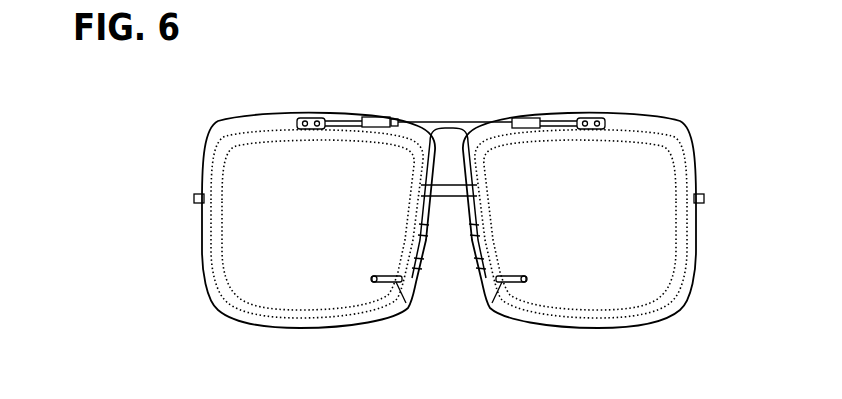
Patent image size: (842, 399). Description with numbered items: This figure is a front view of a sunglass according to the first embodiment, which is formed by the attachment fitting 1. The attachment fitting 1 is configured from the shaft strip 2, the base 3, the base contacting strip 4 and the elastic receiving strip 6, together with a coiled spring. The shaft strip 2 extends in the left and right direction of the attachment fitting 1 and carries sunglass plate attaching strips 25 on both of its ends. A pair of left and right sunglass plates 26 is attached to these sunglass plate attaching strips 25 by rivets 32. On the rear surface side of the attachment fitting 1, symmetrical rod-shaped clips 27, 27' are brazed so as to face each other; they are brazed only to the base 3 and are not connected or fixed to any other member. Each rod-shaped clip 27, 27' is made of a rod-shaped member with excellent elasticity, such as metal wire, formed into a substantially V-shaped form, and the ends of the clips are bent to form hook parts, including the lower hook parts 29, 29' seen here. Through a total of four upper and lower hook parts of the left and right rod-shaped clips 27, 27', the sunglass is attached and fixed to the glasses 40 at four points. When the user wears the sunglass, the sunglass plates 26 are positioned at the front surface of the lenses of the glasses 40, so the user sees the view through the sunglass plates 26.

The attachment fitting 1 is at (462, 127).
The shaft strip 2 is at (552, 118).
The base 3 is at (450, 121).
The base contacting strip 4 is at (528, 118).
The elastic receiving strip 6 is at (375, 117).
The sunglass plate attaching strips 25 is at (592, 116).
The sunglass plates 26 is at (683, 133).
The rod-shaped clip 27 is at (360, 209).
The rod-shaped clip 27' is at (521, 210).
The hook part 29 is at (396, 327).
The hook part 29' is at (499, 327).
The rivets 32 is at (597, 132).
The glasses 40 is at (690, 237).